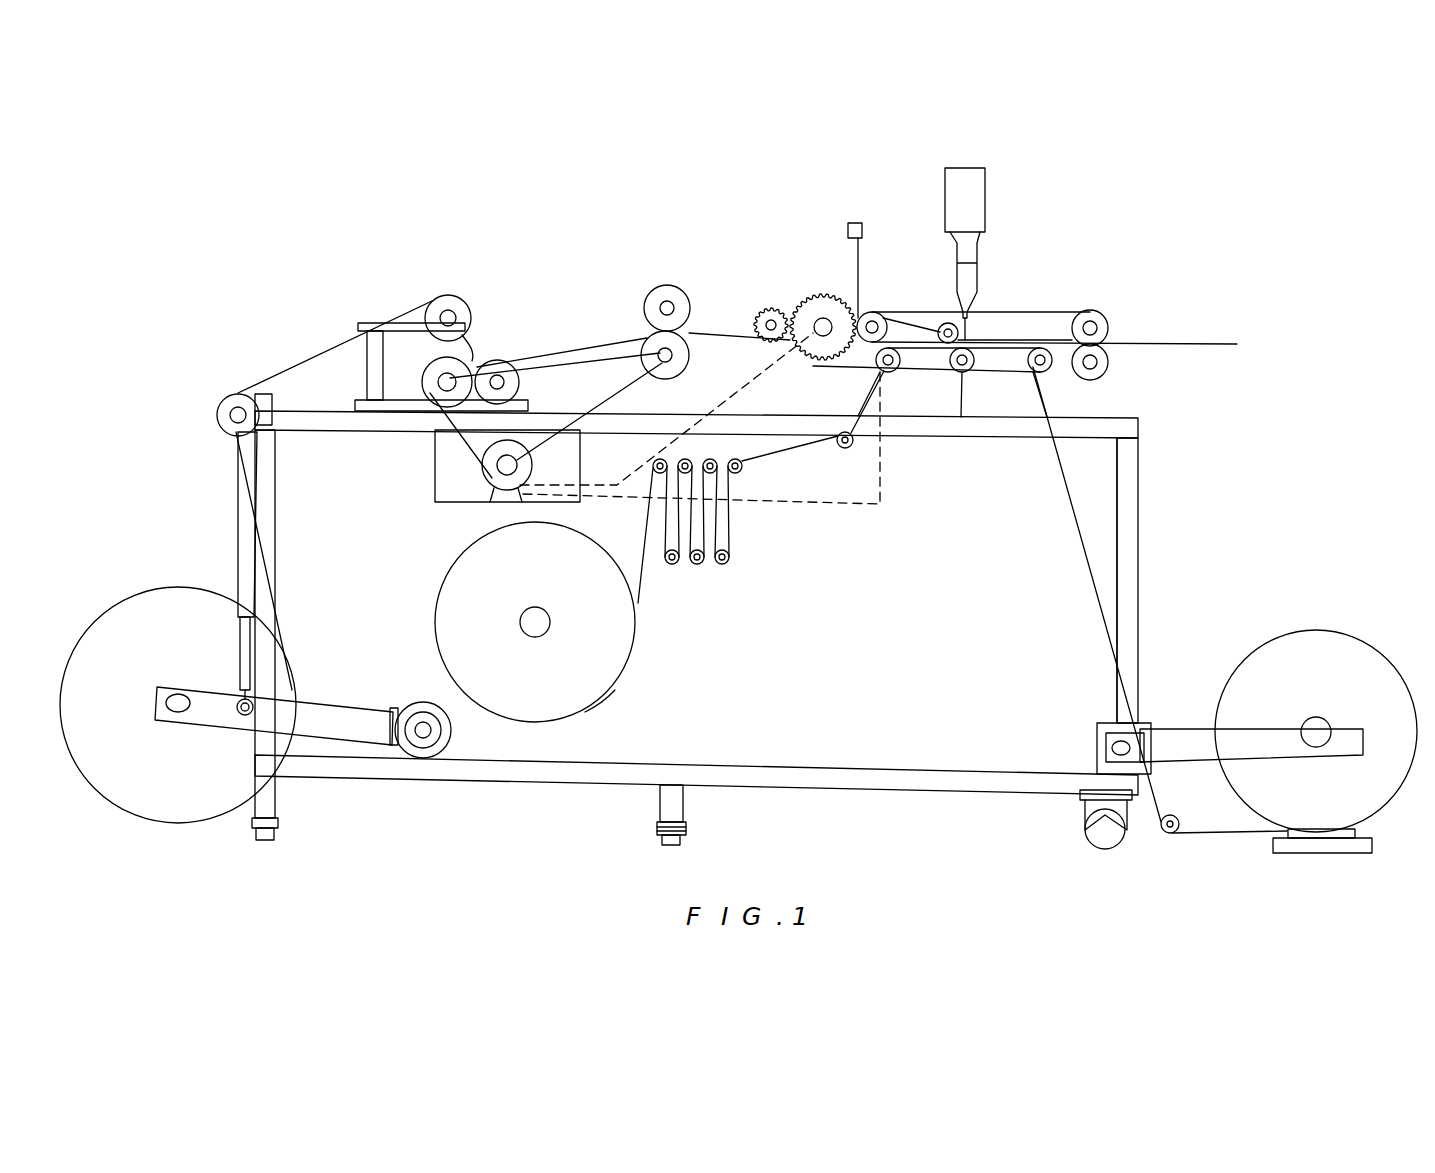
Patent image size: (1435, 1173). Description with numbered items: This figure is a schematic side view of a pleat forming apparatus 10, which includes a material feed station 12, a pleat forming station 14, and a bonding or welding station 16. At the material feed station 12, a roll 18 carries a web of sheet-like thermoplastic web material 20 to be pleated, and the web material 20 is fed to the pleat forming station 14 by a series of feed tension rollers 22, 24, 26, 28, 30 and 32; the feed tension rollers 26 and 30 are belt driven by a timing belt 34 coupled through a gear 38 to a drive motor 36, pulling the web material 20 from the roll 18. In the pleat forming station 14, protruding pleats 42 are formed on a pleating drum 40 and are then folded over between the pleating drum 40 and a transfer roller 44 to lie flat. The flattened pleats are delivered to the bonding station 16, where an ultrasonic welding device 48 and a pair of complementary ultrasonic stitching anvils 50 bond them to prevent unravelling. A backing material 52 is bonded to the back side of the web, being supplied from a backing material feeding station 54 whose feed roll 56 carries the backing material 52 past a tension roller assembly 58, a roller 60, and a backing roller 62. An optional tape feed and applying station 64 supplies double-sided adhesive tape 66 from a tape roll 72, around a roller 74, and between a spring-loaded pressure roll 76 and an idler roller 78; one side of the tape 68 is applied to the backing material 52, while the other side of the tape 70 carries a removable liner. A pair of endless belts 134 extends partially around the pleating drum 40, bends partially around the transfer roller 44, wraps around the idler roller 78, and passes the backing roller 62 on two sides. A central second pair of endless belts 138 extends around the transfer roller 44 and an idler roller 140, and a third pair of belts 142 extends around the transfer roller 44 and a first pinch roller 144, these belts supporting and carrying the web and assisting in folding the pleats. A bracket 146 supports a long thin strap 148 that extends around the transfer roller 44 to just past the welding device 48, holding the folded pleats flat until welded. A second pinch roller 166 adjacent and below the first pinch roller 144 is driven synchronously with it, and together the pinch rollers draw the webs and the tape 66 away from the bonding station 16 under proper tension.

The pleat forming apparatus 10 is at (527, 240).
The material feed station 12 is at (252, 362).
The pleat forming station 14 is at (788, 278).
The bonding station 16 is at (1032, 288).
The roll 18 is at (108, 592).
The web material 20 is at (237, 455).
The feed tension roller 22 is at (226, 400).
The feed tension roller 24 is at (440, 300).
The feed tension roller 26 is at (432, 400).
The feed tension roller 28 is at (490, 400).
The feed tension roller 30 is at (640, 358).
The feed tension roller 32 is at (655, 295).
The timing belt 34 is at (588, 422).
The drive motor 36 is at (487, 490).
The gear 38 is at (765, 310).
The pleating drum 40 is at (817, 330).
The protruding pleats 42 is at (825, 292).
The transfer roller 44 is at (873, 314).
The ultrasonic welding device 48 is at (983, 192).
The ultrasonic stitching anvils 50 is at (962, 380).
The backing material 52 is at (880, 404).
The backing material feeding station 54 is at (656, 645).
The feed roll 56 is at (600, 700).
The tension roller assembly 58 is at (734, 535).
The roller 60 is at (845, 450).
The backing roller 62 is at (878, 370).
The tape feed and applying station 64 is at (1248, 540).
The double-sided adhesive tape 66 is at (1086, 580).
The one side of the tape 68 is at (1076, 533).
The other side of the tape 70 is at (1074, 508).
The tape roll 72 is at (1340, 622).
The roller 74 is at (1180, 820).
The spring-loaded pressure roll 76 is at (1050, 345).
The idler roller 78 is at (1030, 372).
The endless belts 134 is at (812, 365).
The second pair of endless belts 138 is at (926, 310).
The idler roller 140 is at (965, 327).
The third pair of belts 142 is at (1000, 312).
The first pinch roller 144 is at (1103, 318).
The bracket 146 is at (853, 222).
The strap 148 is at (860, 243).
The second pinch roller 166 is at (1103, 375).